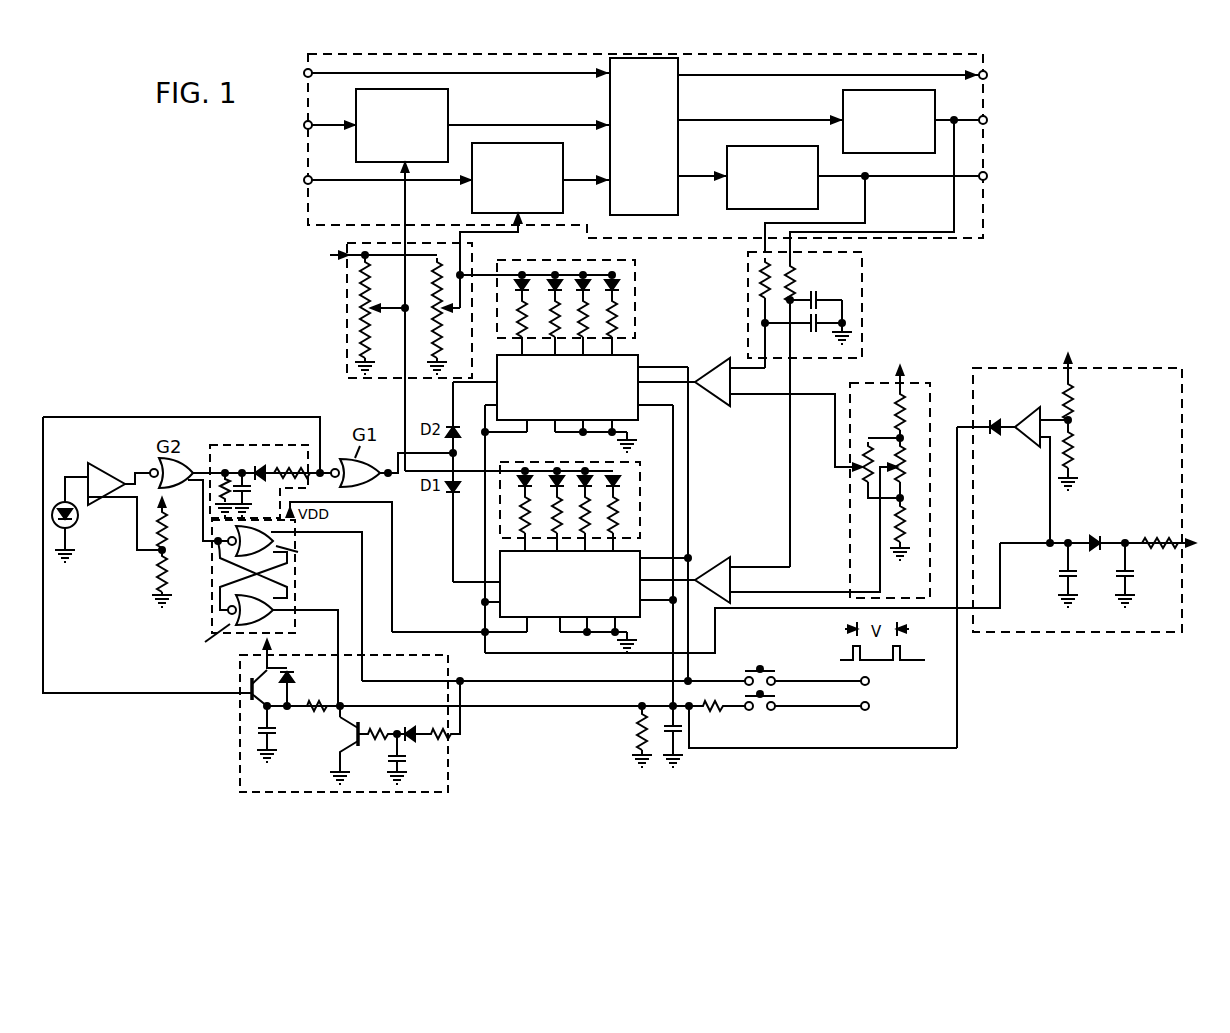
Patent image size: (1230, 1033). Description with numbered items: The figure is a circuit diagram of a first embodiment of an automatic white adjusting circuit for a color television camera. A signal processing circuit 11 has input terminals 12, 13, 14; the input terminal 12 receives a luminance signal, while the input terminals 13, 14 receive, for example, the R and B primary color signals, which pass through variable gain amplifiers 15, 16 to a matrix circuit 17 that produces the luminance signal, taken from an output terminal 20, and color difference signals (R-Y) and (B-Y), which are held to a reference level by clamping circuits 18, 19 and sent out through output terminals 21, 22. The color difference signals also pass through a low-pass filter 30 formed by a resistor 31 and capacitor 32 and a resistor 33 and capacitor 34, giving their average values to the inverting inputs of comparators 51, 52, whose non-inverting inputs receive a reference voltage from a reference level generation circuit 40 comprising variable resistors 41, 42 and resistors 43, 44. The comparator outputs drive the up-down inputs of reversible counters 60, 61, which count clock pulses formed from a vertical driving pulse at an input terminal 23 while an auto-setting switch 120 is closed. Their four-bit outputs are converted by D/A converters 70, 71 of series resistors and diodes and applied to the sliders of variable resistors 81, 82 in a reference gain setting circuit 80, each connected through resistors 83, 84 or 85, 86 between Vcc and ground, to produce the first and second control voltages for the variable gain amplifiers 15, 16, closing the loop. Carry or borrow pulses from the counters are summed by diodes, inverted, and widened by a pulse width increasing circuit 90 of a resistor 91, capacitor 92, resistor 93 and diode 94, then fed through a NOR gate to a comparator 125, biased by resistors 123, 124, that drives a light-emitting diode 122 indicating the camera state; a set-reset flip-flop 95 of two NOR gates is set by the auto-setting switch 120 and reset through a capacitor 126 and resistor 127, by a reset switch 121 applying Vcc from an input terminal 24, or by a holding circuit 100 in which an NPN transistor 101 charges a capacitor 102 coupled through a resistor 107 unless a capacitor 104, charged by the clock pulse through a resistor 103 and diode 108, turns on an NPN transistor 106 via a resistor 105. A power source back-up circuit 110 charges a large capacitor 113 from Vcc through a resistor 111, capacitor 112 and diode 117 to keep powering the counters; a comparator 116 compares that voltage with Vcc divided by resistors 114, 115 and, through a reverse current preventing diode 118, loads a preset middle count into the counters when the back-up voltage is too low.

The signal processing circuit 11 is at (983, 200).
The input terminal 12 is at (304, 73).
The input terminal 13 is at (304, 125).
The input terminal 14 is at (304, 180).
The variable gain amplifier 15 is at (448, 101).
The variable gain amplifier 16 is at (563, 158).
The matrix circuit 17 is at (683, 100).
The clamping circuit 18 is at (843, 100).
The clamping circuit 19 is at (727, 150).
The output terminal 20 is at (987, 75).
The output terminal 21 is at (987, 122).
The output terminal 22 is at (987, 178).
The input terminal 23 is at (869, 683).
The input terminal 24 is at (864, 712).
The low-pass filter 30 is at (862, 270).
The resistor 31 is at (795, 278).
The capacitor 32 is at (822, 290).
The resistor 33 is at (760, 281).
The capacitor 34 is at (814, 330).
The reference level generation circuit 40 is at (920, 410).
The variable resistor 41 is at (906, 462).
The variable resistor 42 is at (862, 478).
The resistor 43 is at (895, 405).
The resistor 44 is at (908, 516).
The comparator 51 is at (727, 564).
The comparator 52 is at (726, 366).
The reversible counter 60 is at (640, 540).
The reversible counter 61 is at (638, 362).
The D/A converter 70 is at (640, 468).
The D/A converter 71 is at (638, 276).
The reference gain setting circuit 80 is at (347, 316).
The variable resistor 81 is at (369, 318).
The variable resistor 82 is at (441, 318).
The resistor 83 is at (365, 286).
The resistor 84 is at (365, 331).
The resistor 85 is at (440, 272).
The resistor 86 is at (433, 338).
The pulse width increasing circuit 90 is at (254, 442).
The resistor 91 is at (286, 468).
The capacitor 92 is at (241, 470).
The resistor 93 is at (222, 470).
The diode 94 is at (264, 482).
The set-reset flip-flop 95 is at (212, 613).
The holding circuit 100 is at (448, 739).
The NPN transistor 101 is at (247, 680).
The capacitor 102 is at (257, 729).
The resistor 103 is at (438, 742).
The capacitor 104 is at (390, 760).
The resistor 105 is at (380, 729).
The NPN transistor 106 is at (353, 736).
The resistor 107 is at (291, 692).
The diode 108 is at (414, 729).
The power source back-up circuit 110 is at (1011, 368).
The resistor 111 is at (1148, 538).
The capacitor 112 is at (1130, 572).
The capacitor 113 is at (1059, 572).
The resistor 114 is at (1070, 404).
The resistor 115 is at (1073, 458).
The comparator 116 is at (1030, 414).
The diode 117 is at (1096, 537).
The reverse current preventing diode 118 is at (991, 420).
The auto-setting switch 120 is at (760, 668).
The reset switch 121 is at (762, 712).
The light-emitting diode 122 is at (77, 521).
The resistor 123 is at (164, 514).
The resistor 124 is at (160, 572).
The comparator 125 is at (105, 468).
The capacitor 126 is at (684, 728).
The resistor 127 is at (637, 730).